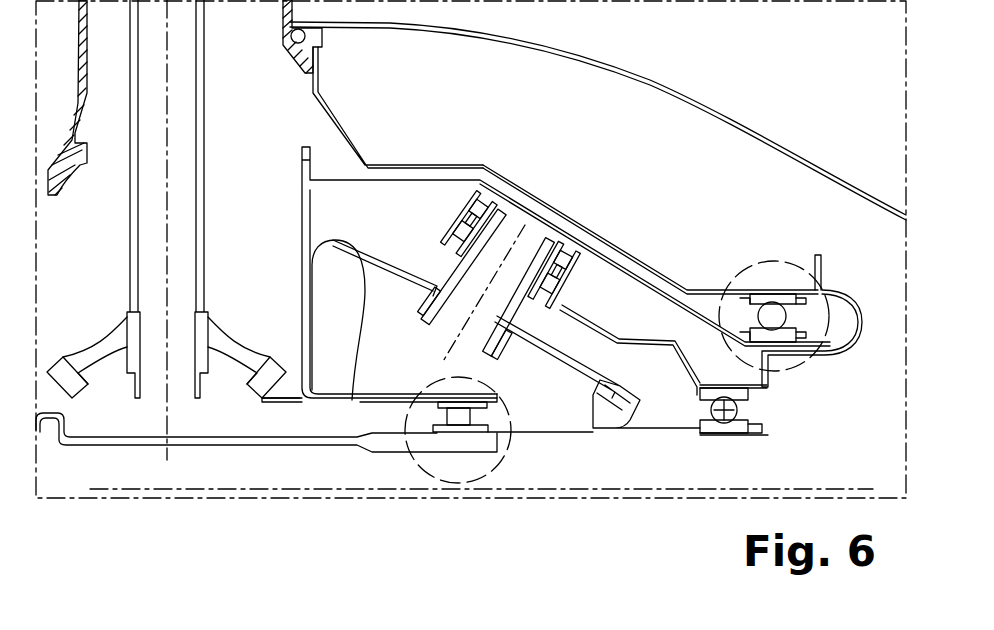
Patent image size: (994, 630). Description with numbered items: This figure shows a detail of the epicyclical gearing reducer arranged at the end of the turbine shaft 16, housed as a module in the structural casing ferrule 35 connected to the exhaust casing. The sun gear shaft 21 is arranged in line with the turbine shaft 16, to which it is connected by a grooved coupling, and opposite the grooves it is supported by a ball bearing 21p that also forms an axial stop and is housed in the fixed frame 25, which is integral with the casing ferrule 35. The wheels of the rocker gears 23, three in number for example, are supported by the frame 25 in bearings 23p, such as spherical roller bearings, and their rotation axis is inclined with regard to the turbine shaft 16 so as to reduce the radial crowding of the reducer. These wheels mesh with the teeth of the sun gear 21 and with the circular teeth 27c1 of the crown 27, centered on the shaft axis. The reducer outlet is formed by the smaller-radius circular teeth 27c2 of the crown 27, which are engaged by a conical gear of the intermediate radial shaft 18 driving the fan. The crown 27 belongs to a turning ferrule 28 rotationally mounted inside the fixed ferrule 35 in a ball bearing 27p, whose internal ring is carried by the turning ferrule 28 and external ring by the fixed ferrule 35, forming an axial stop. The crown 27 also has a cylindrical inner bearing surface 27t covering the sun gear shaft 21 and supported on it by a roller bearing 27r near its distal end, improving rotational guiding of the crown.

The turbine shaft 16 is at (222, 446).
The intermediate shaft 18 is at (134, 207).
The sun gear shaft 21 is at (583, 448).
The bearing 21p is at (717, 422).
The rocker gears 23 is at (400, 257).
The bearings 23p is at (580, 273).
The fixed frame 25 is at (590, 325).
The crown 27 is at (322, 196).
The circular teeth 27c1 is at (352, 400).
The circular teeth 27c2 is at (280, 385).
The cylindrical inner bearing surface 27t is at (383, 402).
The bearing 27r is at (498, 474).
The bearing 27p is at (813, 372).
The turning ferrule 28 is at (553, 208).
The structural casing ferrule 35 is at (388, 163).